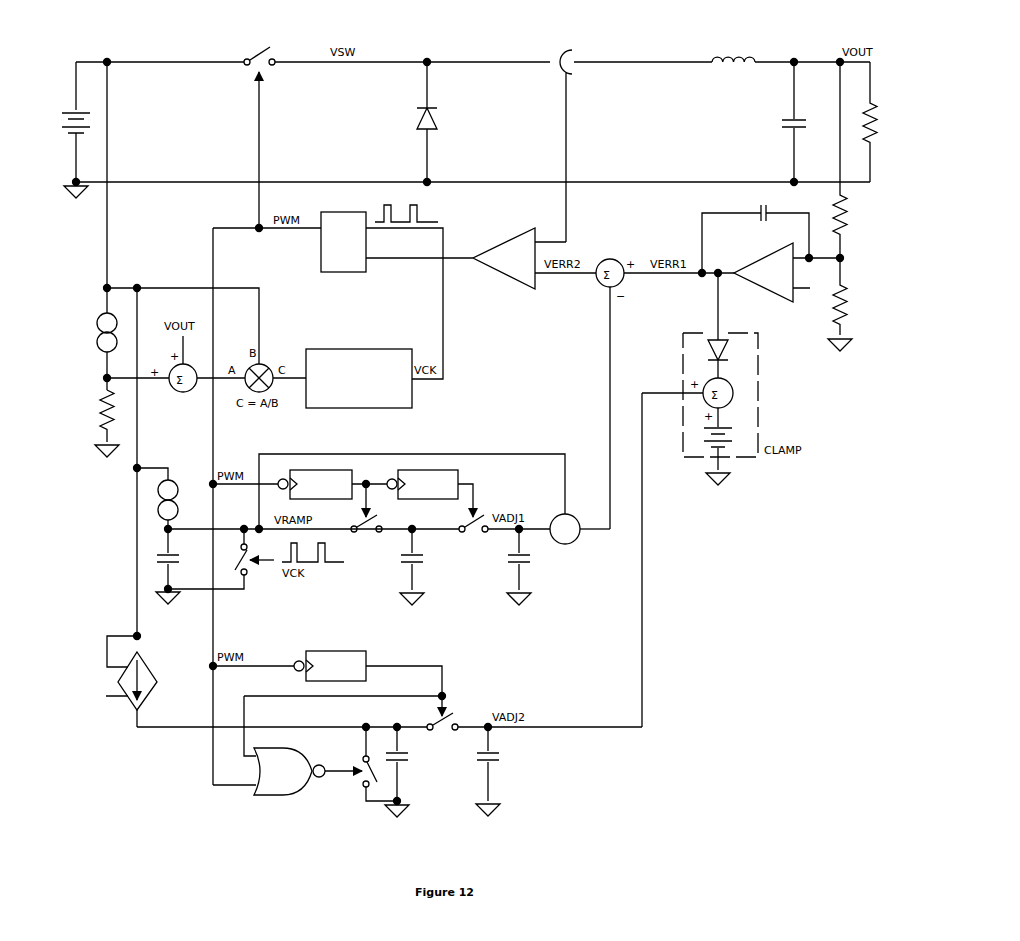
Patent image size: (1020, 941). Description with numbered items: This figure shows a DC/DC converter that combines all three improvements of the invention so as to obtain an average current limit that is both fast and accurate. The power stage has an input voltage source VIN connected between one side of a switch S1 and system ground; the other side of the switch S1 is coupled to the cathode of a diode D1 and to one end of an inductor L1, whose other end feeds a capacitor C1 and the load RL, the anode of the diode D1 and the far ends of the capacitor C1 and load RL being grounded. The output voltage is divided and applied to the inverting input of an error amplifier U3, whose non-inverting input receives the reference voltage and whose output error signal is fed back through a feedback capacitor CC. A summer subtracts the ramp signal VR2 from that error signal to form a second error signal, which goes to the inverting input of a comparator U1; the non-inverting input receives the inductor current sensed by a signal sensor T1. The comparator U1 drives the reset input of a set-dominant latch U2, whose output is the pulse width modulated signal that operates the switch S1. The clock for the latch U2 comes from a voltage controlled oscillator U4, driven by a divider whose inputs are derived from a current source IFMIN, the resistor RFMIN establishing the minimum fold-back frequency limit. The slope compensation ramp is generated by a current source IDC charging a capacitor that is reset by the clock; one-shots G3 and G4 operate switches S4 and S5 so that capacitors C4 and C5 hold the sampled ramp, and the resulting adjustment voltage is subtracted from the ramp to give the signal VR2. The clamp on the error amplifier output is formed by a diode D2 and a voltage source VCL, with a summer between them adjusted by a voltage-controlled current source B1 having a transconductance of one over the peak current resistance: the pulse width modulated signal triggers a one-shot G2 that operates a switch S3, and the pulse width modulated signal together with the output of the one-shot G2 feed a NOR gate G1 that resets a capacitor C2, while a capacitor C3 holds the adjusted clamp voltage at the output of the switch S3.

The input voltage source VIN is at (65, 122).
The switch S1 is at (259, 131).
The diode D1 is at (437, 122).
The signal sensor T1 is at (563, 138).
The inductor L1 is at (733, 50).
The capacitor C1 is at (802, 122).
The load RL is at (880, 122).
The error amplifier U3 is at (787, 268).
The feedback capacitor CC is at (757, 233).
The comparator U1 is at (481, 258).
The latch U2 is at (371, 288).
The voltage controlled oscillator U4 is at (361, 381).
The current source IFMIN is at (89, 351).
The resistor RFMIN is at (87, 423).
The current source IDC is at (168, 535).
The one-shot G3 is at (332, 492).
The one-shot G4 is at (430, 493).
The switch S4 is at (366, 531).
The switch S5 is at (473, 531).
The capacitor C4 is at (420, 567).
The capacitor C5 is at (527, 567).
The signal VR2 is at (573, 521).
The diode D2 is at (729, 359).
The voltage source VCL is at (728, 446).
The voltage-controlled current source B1 is at (130, 680).
The one-shot G2 is at (368, 676).
The switch S3 is at (442, 730).
The NOR gate G1 is at (308, 776).
The capacitor C2 is at (405, 772).
The capacitor C3 is at (496, 771).